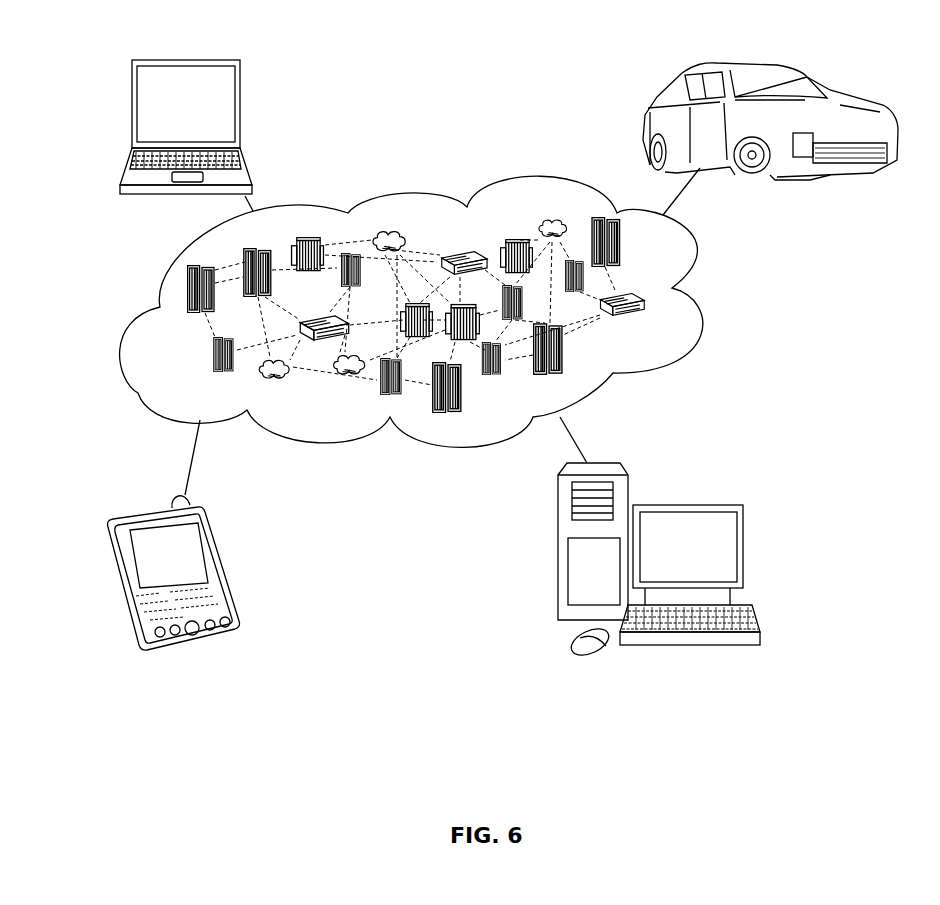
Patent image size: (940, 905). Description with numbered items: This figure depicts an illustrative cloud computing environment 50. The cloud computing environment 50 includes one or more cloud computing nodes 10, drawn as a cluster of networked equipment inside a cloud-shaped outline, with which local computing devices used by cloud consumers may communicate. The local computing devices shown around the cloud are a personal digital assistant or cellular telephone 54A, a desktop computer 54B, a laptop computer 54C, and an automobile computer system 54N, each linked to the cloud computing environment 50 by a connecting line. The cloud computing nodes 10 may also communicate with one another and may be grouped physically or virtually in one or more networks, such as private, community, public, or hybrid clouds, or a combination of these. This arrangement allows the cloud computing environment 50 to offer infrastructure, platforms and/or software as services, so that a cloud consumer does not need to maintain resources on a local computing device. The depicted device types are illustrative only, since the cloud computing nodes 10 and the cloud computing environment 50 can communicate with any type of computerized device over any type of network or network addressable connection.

The cloud computing nodes 10 is at (660, 335).
The cloud computing environment 50 is at (702, 250).
The personal digital assistant or cellular telephone 54A is at (217, 547).
The desktop computer 54B is at (745, 545).
The laptop computer 54C is at (243, 108).
The automobile computer system 54N is at (800, 80).